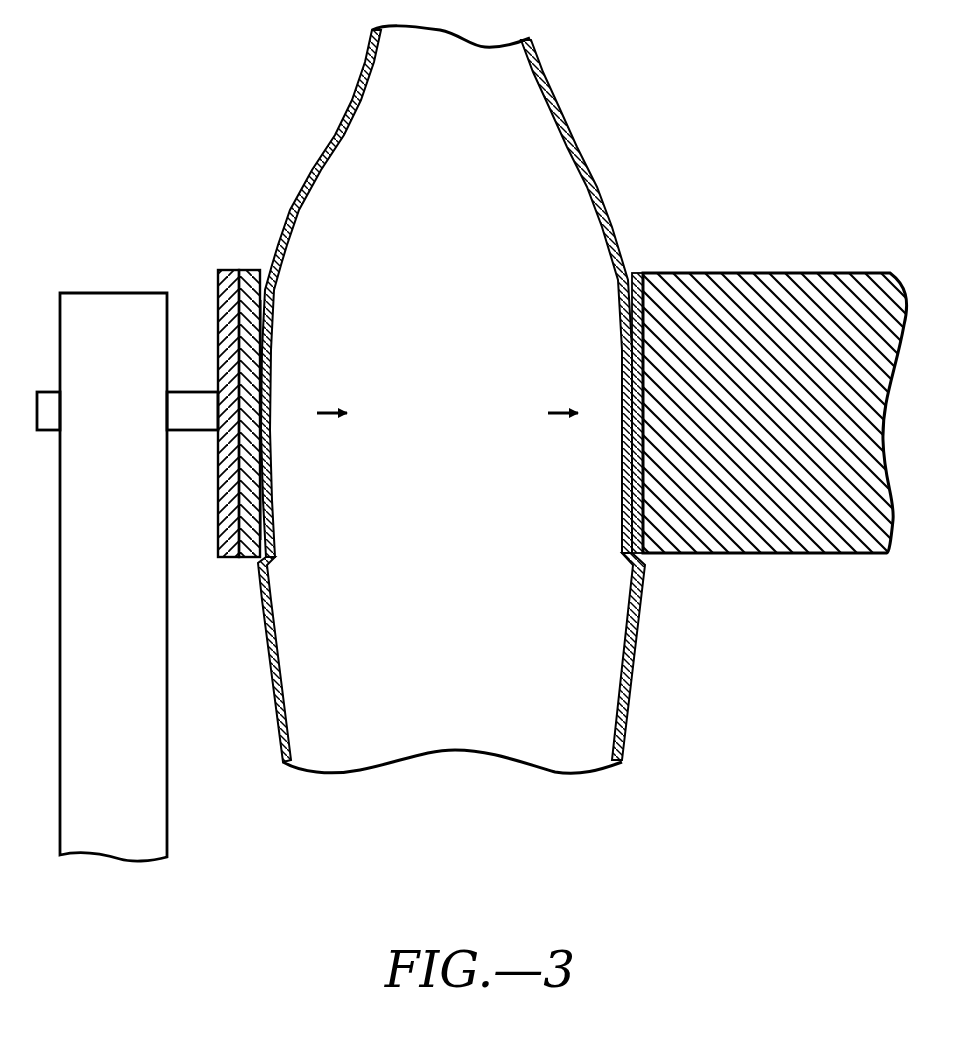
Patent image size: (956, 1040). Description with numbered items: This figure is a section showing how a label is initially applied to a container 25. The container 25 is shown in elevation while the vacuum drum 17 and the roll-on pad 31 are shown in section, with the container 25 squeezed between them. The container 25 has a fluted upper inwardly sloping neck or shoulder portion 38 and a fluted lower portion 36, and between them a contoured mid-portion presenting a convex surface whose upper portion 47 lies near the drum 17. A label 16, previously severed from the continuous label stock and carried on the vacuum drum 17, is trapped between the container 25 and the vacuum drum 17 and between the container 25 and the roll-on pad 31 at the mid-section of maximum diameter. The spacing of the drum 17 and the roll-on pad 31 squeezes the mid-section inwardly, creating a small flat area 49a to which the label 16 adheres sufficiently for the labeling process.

The container 25 is at (660, 122).
The label 16 is at (270, 270).
The upper inwardly sloping neck or shoulder portion 38 is at (475, 227).
The lower portion 36 is at (484, 641).
The roll-on pad 31 is at (226, 268).
The vacuum drum 17 is at (765, 273).
The upper portion of convex surface 47 is at (660, 273).
The small flat area 49a is at (269, 436).